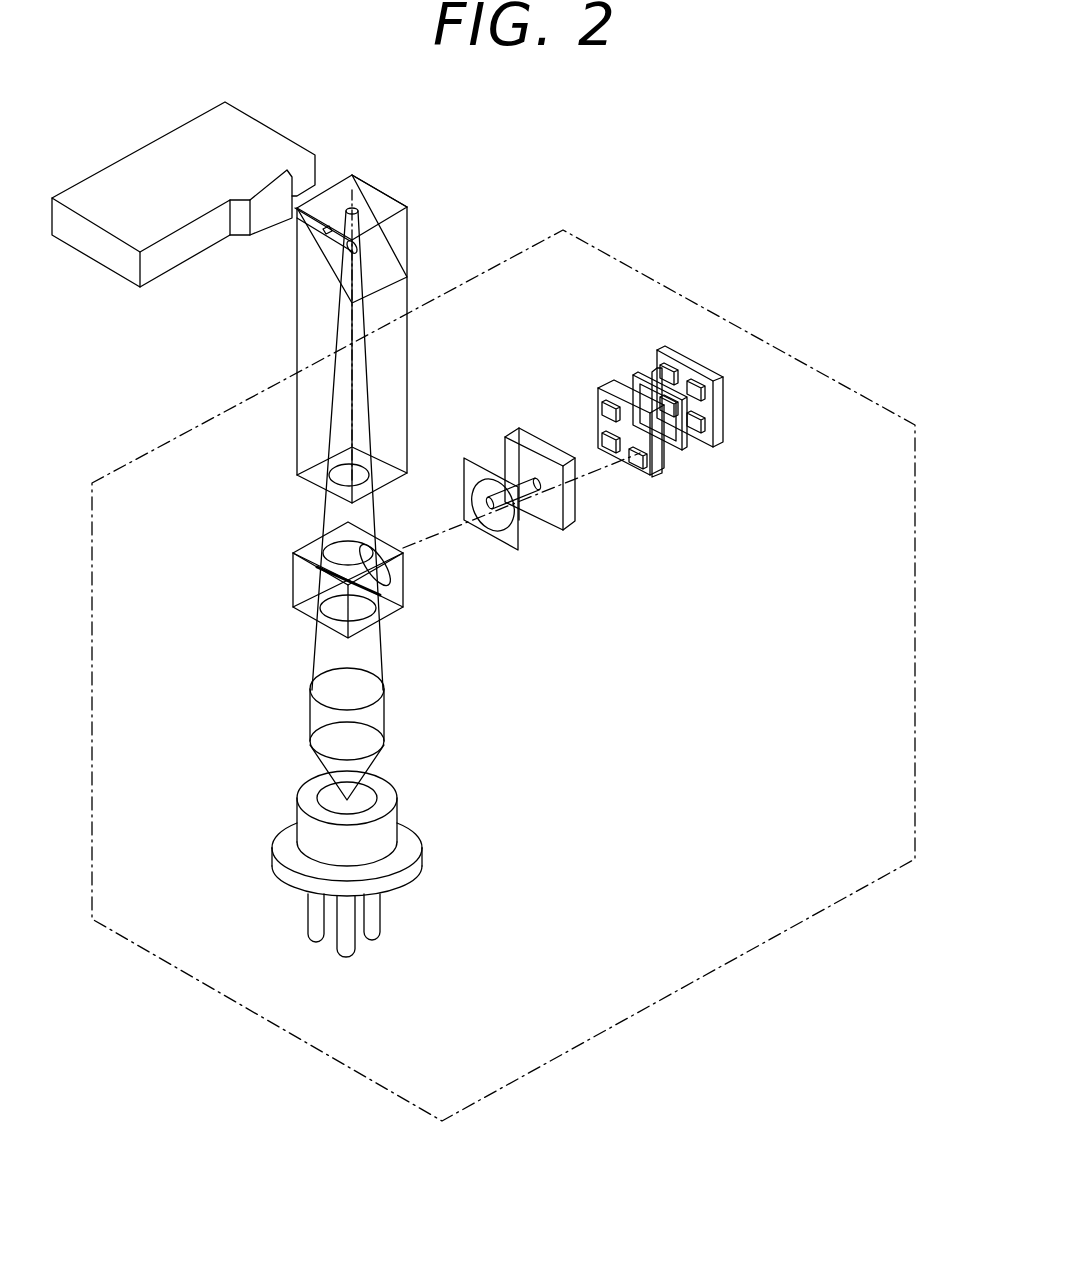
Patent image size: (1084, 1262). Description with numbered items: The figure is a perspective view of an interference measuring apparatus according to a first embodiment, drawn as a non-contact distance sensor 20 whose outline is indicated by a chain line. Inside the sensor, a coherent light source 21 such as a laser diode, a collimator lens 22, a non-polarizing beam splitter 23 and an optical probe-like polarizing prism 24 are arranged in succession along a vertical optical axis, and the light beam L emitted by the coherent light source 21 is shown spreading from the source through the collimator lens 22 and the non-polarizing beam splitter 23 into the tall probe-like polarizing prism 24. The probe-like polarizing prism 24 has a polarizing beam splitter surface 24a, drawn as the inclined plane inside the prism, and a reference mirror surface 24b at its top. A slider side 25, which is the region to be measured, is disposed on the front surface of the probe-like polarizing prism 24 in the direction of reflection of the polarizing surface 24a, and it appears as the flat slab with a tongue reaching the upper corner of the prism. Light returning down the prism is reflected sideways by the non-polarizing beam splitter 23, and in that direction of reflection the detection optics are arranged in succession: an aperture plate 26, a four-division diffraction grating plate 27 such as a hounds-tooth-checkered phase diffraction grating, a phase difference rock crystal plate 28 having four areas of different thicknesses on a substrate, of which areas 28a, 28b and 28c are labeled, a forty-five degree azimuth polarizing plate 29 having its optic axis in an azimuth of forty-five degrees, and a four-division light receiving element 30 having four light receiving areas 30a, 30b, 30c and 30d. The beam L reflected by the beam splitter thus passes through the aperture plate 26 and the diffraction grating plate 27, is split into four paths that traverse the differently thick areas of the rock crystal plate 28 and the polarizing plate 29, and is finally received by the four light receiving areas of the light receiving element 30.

The non-contact distance sensor 20 is at (728, 322).
The coherent light source 21 is at (293, 813).
The collimator lens 22 is at (312, 722).
The non-polarizing beam splitter 23 is at (293, 580).
The probe-like polarizing prism 24 is at (359, 321).
The polarizing beam splitter surface 24a is at (333, 280).
The reference mirror surface 24b is at (408, 190).
The slider side 25 is at (272, 192).
The aperture plate 26 is at (493, 522).
The four-division diffraction grating plate 27 is at (547, 498).
The phase difference rock crystal plate 28 is at (617, 425).
The area of the phase difference rock crystal plate 28a is at (670, 450).
The area of the phase difference rock crystal plate 28b is at (600, 402).
The area of the phase difference rock crystal plate 28c is at (602, 438).
The 45° azimuth polarizing plate 29 is at (690, 443).
The four-division light receiving element 30 is at (717, 360).
The light receiving area 30a is at (717, 420).
The light receiving area 30b is at (712, 395).
The light receiving area 30c is at (668, 363).
The light receiving area 30d is at (633, 366).
The laser beam L is at (338, 651).